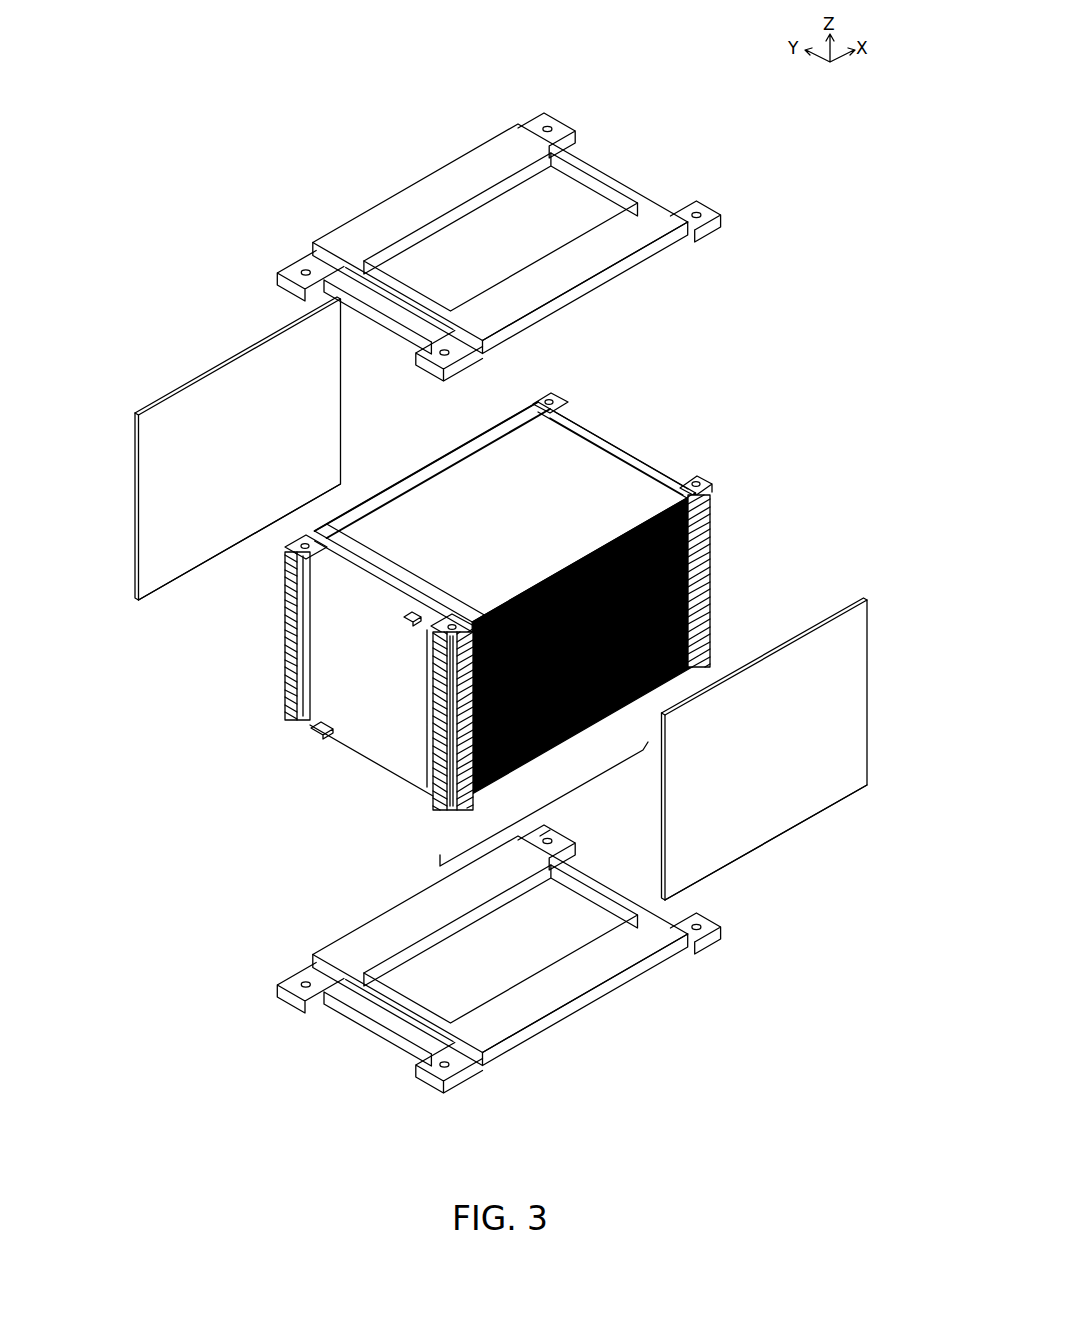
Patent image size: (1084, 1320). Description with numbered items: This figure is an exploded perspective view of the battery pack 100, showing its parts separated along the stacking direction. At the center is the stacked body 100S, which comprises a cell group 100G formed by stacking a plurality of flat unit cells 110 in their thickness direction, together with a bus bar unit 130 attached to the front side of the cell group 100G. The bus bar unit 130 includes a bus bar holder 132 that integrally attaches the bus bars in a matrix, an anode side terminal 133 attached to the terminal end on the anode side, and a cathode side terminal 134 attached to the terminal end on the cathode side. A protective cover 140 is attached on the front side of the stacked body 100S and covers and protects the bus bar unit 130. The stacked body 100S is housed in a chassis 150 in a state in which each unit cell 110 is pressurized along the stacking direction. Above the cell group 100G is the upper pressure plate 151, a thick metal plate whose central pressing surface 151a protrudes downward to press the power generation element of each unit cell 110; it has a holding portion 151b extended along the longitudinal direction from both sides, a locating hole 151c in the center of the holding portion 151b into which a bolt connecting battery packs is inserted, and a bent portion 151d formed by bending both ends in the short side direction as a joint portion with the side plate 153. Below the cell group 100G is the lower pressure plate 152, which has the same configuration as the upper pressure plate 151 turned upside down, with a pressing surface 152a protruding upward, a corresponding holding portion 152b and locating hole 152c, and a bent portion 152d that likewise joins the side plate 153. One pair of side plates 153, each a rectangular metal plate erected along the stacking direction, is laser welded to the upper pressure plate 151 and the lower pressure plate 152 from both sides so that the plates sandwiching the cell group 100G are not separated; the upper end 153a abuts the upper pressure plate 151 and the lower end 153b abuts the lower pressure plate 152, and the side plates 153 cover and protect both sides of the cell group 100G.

The battery pack 100 is at (166, 29).
The unit cell 110 is at (590, 450).
The bus bar unit 130 is at (421, 794).
The bus bar holder 132 is at (428, 723).
The anode side terminal 133 is at (408, 617).
The cathode side terminal 134 is at (315, 733).
The protective cover 140 is at (313, 653).
The chassis 150 is at (664, 982).
The upper pressure plate 151 is at (438, 153).
The pressing surface 151a is at (530, 225).
The holding portion 151b is at (463, 349).
The locating hole 151c is at (442, 367).
The bent portion 151d is at (675, 242).
The lower pressure plate 152 is at (556, 1031).
The pressing surface 152a is at (513, 955).
The holding portion 152b is at (483, 1050).
The locating hole 152c is at (442, 1068).
The bent portion 152d is at (500, 1050).
The side plate 153 is at (206, 354).
The upper end 153a is at (270, 340).
The lower end 153b is at (177, 558).
The cell group 100G is at (578, 735).
The stacked body 100S is at (546, 833).